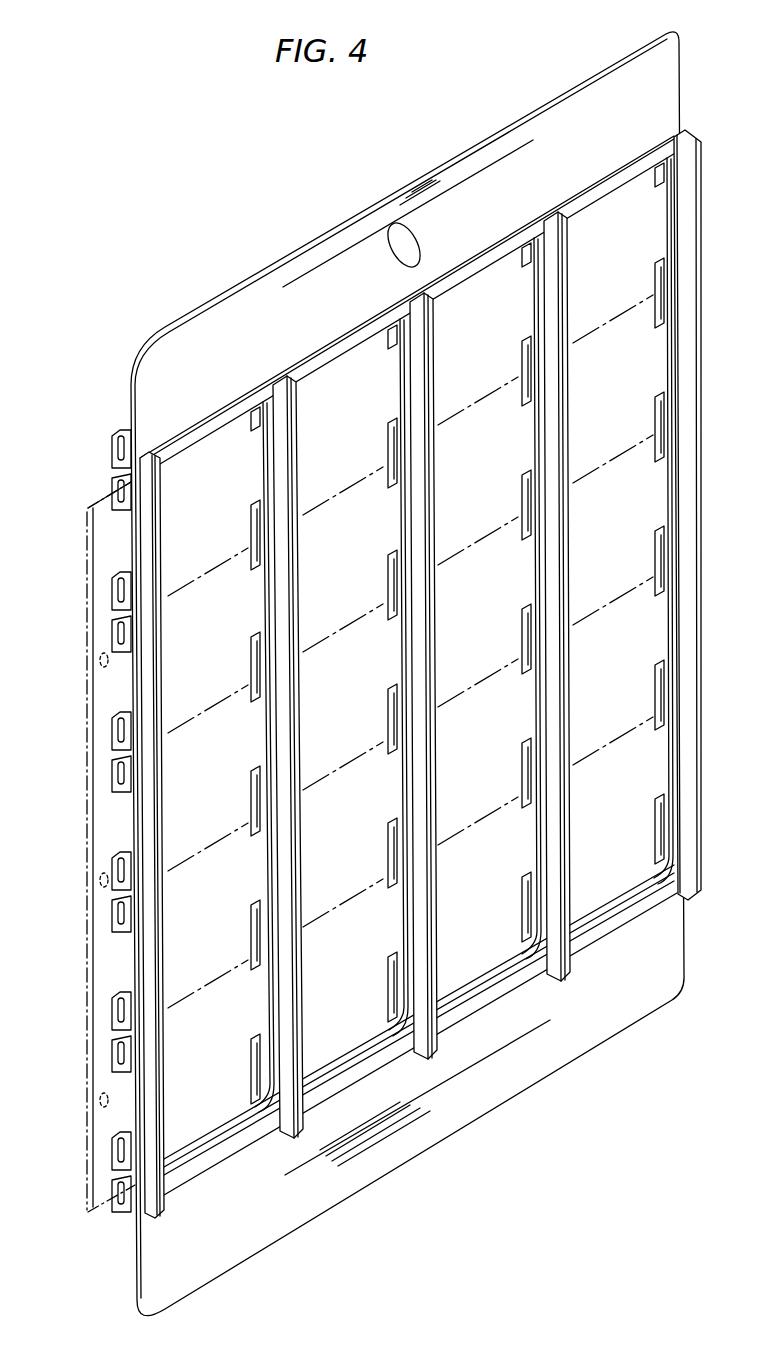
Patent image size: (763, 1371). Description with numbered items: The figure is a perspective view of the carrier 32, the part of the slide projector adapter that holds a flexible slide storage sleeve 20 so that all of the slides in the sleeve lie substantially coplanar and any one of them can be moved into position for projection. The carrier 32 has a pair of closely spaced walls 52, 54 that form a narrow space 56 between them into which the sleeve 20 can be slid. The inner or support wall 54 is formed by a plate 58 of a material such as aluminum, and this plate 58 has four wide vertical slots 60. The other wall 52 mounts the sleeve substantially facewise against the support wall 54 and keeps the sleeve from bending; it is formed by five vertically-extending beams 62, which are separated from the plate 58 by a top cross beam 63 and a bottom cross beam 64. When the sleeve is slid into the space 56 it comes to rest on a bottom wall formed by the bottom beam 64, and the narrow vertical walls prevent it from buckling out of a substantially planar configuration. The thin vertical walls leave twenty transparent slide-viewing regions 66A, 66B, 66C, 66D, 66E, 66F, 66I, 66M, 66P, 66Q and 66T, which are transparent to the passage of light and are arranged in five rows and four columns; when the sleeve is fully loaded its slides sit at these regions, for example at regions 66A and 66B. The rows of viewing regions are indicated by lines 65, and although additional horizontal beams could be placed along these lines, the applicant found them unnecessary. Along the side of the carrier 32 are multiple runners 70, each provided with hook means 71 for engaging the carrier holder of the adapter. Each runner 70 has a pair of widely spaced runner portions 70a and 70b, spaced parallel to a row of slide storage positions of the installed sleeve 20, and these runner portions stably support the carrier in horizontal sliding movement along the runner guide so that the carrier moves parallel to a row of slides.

The slide storage sleeve 20 is at (90, 508).
The carrier 32 is at (676, 33).
The wall 52 is at (148, 748).
The support wall 54 is at (135, 692).
The narrow space 56 is at (140, 673).
The plate 58 is at (197, 318).
The vertical slots 60 is at (402, 337).
The vertically-extending beams 62 is at (488, 413).
The top cross beam 63 is at (652, 150).
The bottom cross beam 64 is at (668, 886).
The lines 65 is at (672, 290).
The transparent slide-viewing region 66A is at (232, 495).
The transparent slide-viewing region 66B is at (362, 420).
The transparent slide-viewing region 66C is at (499, 338).
The transparent slide-viewing region 66D is at (635, 255).
The transparent slide-viewing region 66E is at (229, 633).
The transparent slide-viewing region 66F is at (364, 541).
The transparent slide-viewing region 66I is at (229, 788).
The transparent slide-viewing region 66M is at (229, 931).
The transparent slide-viewing region 66P is at (631, 688).
The transparent slide-viewing region 66Q is at (229, 1066).
The transparent slide-viewing region 66T is at (631, 836).
The runner 70 is at (110, 868).
The runner portion 70a is at (118, 597).
The runner portion 70b is at (662, 257).
The hook means 71 is at (118, 1065).